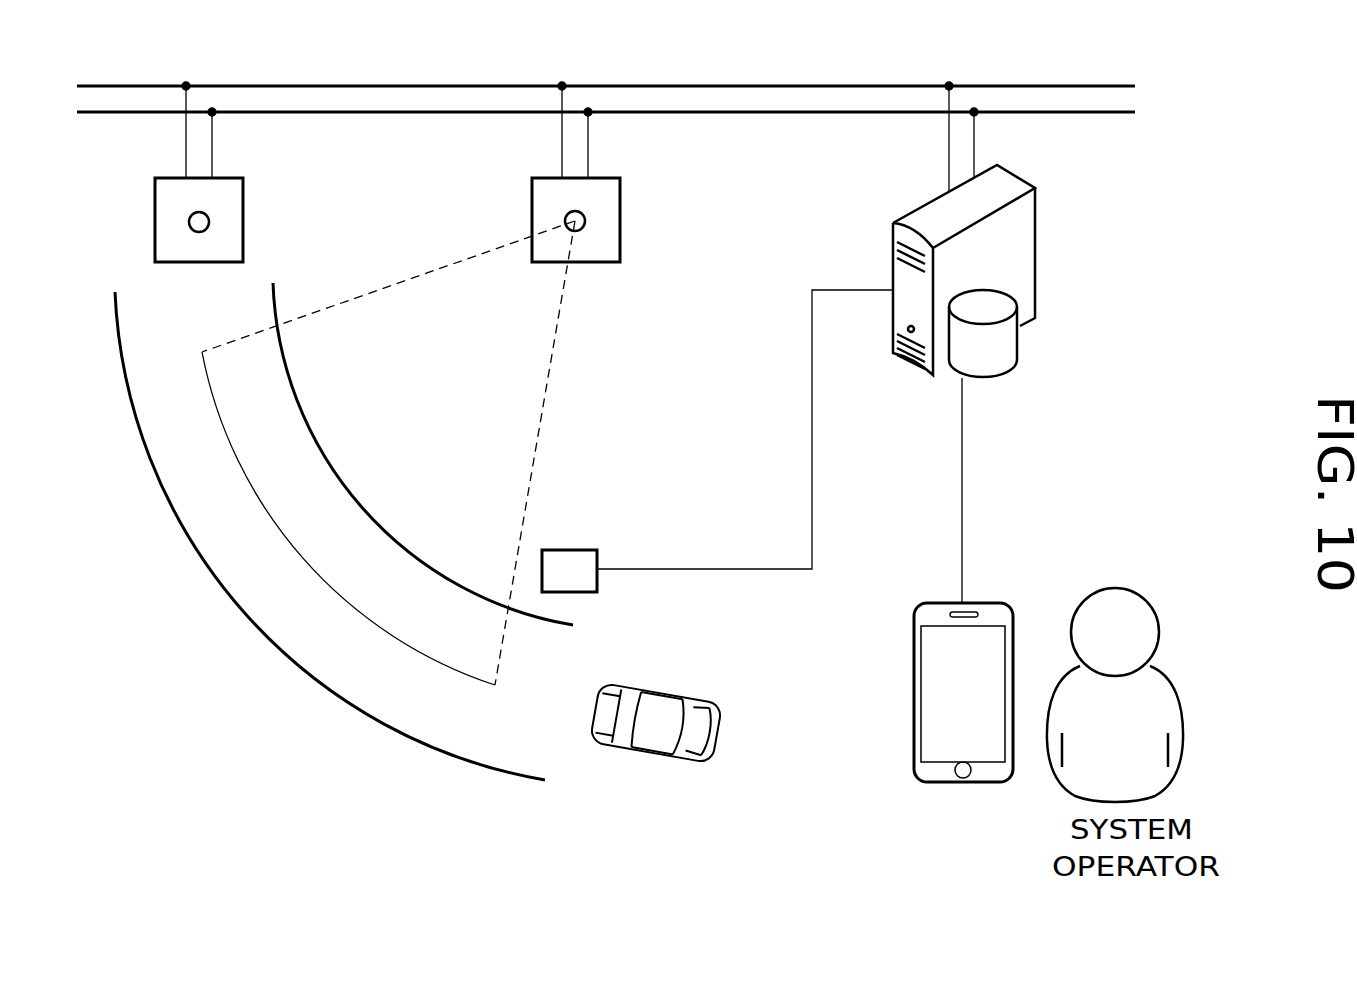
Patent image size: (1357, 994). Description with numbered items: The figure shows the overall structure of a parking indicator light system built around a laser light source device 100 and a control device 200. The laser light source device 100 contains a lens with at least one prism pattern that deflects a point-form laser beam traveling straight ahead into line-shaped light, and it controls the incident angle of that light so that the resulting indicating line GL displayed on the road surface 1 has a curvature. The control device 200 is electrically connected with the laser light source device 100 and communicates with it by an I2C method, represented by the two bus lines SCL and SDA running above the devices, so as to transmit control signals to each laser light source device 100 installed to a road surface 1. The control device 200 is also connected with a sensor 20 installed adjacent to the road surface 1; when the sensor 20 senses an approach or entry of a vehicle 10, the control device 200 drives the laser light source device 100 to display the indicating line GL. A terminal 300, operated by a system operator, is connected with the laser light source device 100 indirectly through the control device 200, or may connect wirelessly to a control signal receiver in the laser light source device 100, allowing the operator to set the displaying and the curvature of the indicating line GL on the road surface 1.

The road surface 1 is at (277, 648).
The indicating line GL is at (417, 653).
The vehicle 10 is at (667, 693).
The sensor 20 is at (568, 550).
The laser light source device 100 is at (532, 204).
The control device 200 is at (918, 205).
The terminal 300 is at (914, 668).
The serial clock line SCL is at (637, 85).
The serial data line SDA is at (637, 120).